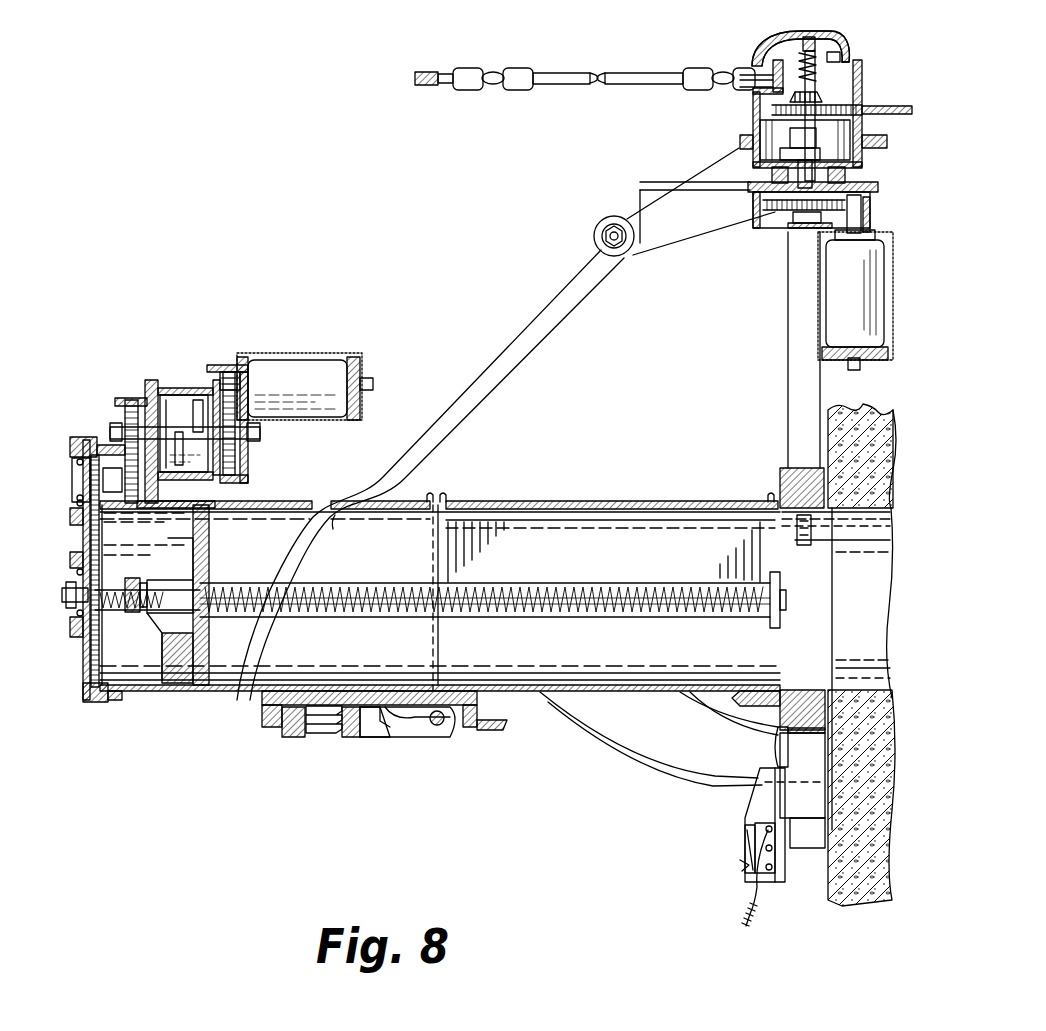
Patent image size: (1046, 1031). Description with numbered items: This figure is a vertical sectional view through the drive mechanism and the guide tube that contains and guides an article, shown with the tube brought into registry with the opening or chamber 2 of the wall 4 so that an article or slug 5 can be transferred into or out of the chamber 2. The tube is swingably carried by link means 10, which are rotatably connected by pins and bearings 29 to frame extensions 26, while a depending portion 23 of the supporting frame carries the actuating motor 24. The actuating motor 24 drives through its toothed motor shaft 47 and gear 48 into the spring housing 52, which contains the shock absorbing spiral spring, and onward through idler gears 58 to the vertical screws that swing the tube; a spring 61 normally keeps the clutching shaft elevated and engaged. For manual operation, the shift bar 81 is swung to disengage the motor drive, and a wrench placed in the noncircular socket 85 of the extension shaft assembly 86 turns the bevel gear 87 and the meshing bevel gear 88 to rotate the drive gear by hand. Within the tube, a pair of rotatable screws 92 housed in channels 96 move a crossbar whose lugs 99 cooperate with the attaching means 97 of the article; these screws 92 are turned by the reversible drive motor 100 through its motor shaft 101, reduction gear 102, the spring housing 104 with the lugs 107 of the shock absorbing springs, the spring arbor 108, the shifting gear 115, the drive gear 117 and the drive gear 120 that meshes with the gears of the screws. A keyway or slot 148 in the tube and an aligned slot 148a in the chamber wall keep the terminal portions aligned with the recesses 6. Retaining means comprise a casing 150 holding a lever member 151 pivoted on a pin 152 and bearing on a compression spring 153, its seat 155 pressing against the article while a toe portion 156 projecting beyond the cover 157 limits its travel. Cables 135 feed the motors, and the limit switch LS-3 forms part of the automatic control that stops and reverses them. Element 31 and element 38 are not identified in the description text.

The opening or chamber 2 is at (870, 602).
The wall 4 is at (882, 462).
The article or slug 5 is at (436, 640).
The recesses 6 is at (804, 545).
The link means 10 is at (550, 325).
The depending portion of the supporting frame 23 is at (788, 353).
The actuating motor 24 is at (885, 291).
The frame extensions 26 is at (666, 230).
The pins and bearings 29 is at (608, 236).
The guide arc 31 is at (664, 763).
The cylinder housing 38 is at (618, 503).
The toothed motor shaft 47 is at (861, 205).
The gear 48 is at (772, 216).
The spring housing 52 is at (752, 152).
The idler gears 58 is at (896, 114).
The spring 61 is at (833, 73).
The shift bar 81 is at (810, 37).
The noncircular socket 85 is at (416, 78).
The extension shaft assembly 86 is at (614, 72).
The bevel gear 87 is at (754, 116).
The meshing bevel gear 88 is at (848, 100).
The rotatable screws 92 is at (556, 596).
The channels 96 is at (383, 590).
The attaching means 97 is at (208, 561).
The lugs 99 is at (158, 587).
The reversible drive motor 100 is at (315, 355).
The motor shaft 101 is at (220, 372).
The reduction gear 102 is at (240, 465).
The spring housing 104 is at (182, 415).
The lugs 107 is at (200, 400).
The spring arbor 108 is at (130, 410).
The shifting gear 115 is at (126, 503).
The drive gear 117 is at (98, 432).
The drive gear 120 is at (100, 653).
The conductors or cables 135 is at (756, 920).
The keyway or slot 148 is at (132, 692).
The aligned slot 148a is at (806, 695).
The casing 150 is at (490, 729).
The lever member 151 is at (428, 738).
The pin 152 is at (437, 728).
The compression spring 153 is at (334, 736).
The seat 155 is at (380, 736).
The toe portion 156 is at (260, 716).
The cover 157 is at (272, 730).
The limit switch LS-3 is at (758, 830).